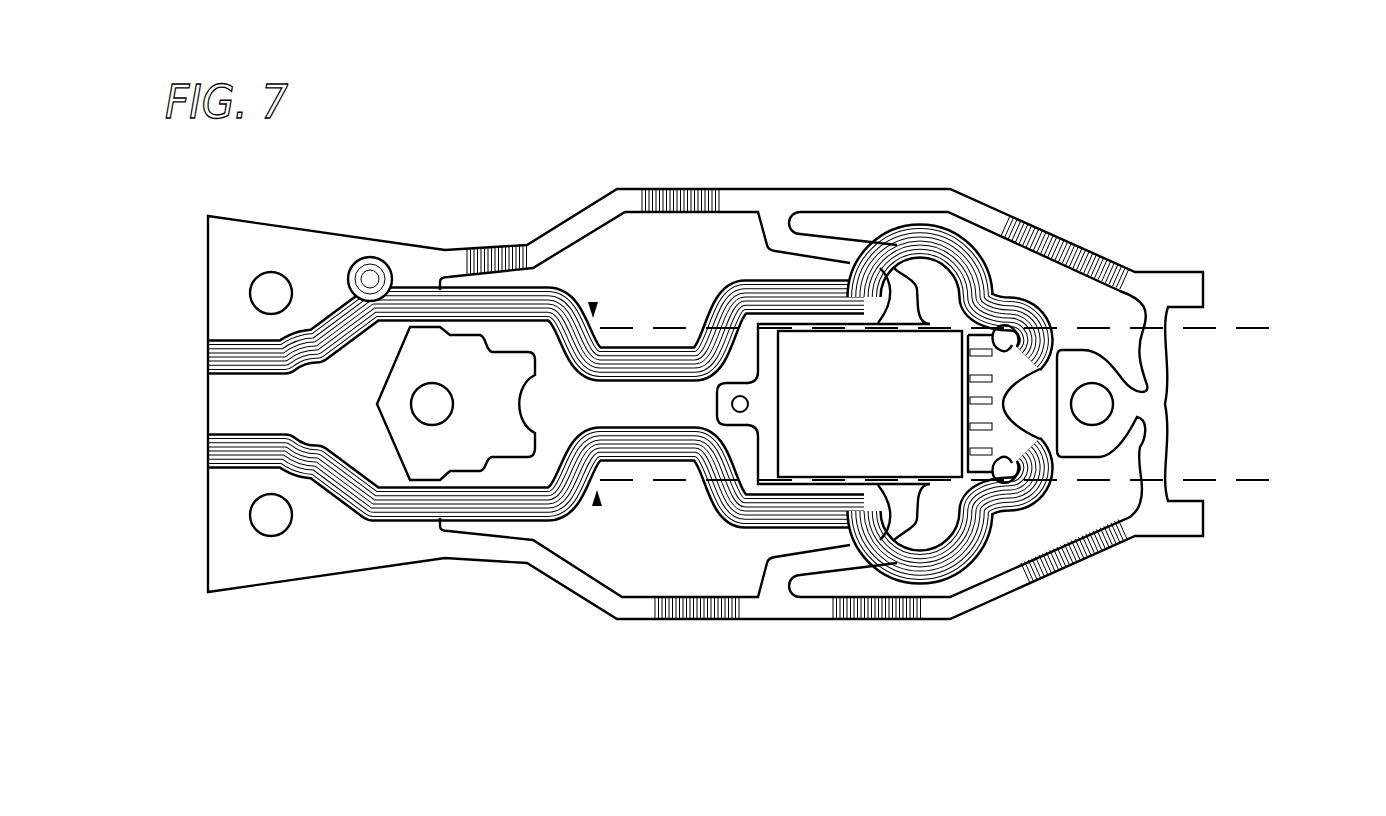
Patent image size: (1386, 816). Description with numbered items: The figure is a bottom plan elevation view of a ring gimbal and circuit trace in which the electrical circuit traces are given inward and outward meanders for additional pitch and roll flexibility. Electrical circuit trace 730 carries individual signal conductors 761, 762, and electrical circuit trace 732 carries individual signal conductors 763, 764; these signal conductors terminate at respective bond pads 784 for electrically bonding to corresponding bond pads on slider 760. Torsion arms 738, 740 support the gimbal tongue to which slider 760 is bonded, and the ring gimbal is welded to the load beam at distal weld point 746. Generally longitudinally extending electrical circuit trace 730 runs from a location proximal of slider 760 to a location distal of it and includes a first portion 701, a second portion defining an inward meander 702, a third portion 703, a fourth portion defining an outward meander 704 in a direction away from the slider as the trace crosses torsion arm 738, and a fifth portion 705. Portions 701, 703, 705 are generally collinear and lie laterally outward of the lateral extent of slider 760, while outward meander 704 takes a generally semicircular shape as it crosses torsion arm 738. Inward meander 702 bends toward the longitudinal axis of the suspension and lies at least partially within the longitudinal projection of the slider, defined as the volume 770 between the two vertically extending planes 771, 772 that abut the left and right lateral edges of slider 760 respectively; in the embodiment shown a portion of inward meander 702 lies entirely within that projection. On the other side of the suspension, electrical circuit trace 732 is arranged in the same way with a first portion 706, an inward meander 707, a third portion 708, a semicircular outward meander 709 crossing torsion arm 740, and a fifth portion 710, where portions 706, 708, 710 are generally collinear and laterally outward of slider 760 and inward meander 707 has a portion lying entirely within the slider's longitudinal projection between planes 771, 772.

The first portion 701 is at (512, 290).
The inward meander 702 is at (662, 347).
The third portion 703 is at (770, 282).
The outward meander 704 is at (920, 223).
The fifth portion 705 is at (1000, 280).
The first portion 706 is at (513, 517).
The inward meander 707 is at (645, 460).
The third portion 708 is at (795, 525).
The outward meander 709 is at (921, 583).
The fifth portion 710 is at (1003, 527).
The electrical circuit trace 730 is at (593, 305).
The electrical circuit trace 732 is at (597, 503).
The torsion arm 738 is at (838, 238).
The torsion arm 740 is at (832, 570).
The distal weld point 746 is at (1092, 404).
The slider 760 is at (885, 417).
The signal conductor 761 is at (207, 355).
The signal conductor 762 is at (207, 364).
The signal conductor 763 is at (207, 443).
The signal conductor 764 is at (207, 452).
The volume 770 is at (1256, 366).
The vertically extending plane 771 is at (1281, 328).
The vertically extending plane 772 is at (1281, 480).
The bond pads 784 is at (983, 353).